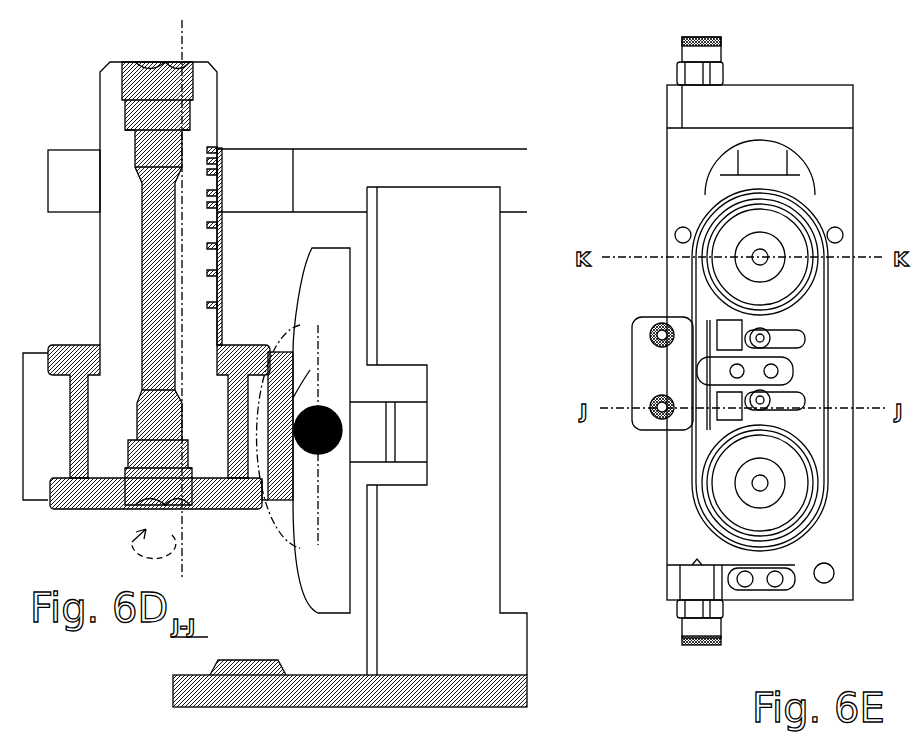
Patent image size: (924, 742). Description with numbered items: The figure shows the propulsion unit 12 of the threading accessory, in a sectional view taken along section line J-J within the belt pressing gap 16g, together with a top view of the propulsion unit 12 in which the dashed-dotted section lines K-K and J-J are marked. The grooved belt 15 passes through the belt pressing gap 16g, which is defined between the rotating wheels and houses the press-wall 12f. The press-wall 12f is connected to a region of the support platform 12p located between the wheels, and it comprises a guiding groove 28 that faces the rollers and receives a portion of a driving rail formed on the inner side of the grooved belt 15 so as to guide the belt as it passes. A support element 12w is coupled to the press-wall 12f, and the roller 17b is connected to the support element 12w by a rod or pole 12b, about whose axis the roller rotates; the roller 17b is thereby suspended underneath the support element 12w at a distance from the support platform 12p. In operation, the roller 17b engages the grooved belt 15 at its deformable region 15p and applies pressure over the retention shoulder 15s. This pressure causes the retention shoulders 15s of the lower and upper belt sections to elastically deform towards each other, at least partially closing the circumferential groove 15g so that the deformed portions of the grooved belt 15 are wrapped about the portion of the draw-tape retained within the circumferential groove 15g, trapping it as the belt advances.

In FIG. 6E, the propulsion unit 12 is at (578, 56).
In FIG. 6D, the rod/pole 12b is at (217, 121).
In FIG. 6D, the support element 12w is at (330, 149).
In FIG. 6D, the press-wall 12f is at (456, 297).
In FIG. 6E, the press-wall 12f is at (722, 332).
In FIG. 6E, the support platform 12p is at (530, 690).
In FIG. 6D, the grooved belt 15 is at (300, 285).
In FIG. 6D, the retention shoulder 15s is at (298, 398).
In FIG. 6D, the circumferential groove 15g is at (340, 437).
In FIG. 6D, the deformable region 15p is at (278, 510).
In FIG. 6D, the belt pressing gap 16g is at (283, 317).
In FIG. 6E, the belt pressing gap 16g is at (640, 430).
In FIG. 6D, the roller 17b is at (42, 353).
In FIG. 6D, the guiding groove 28 is at (415, 428).